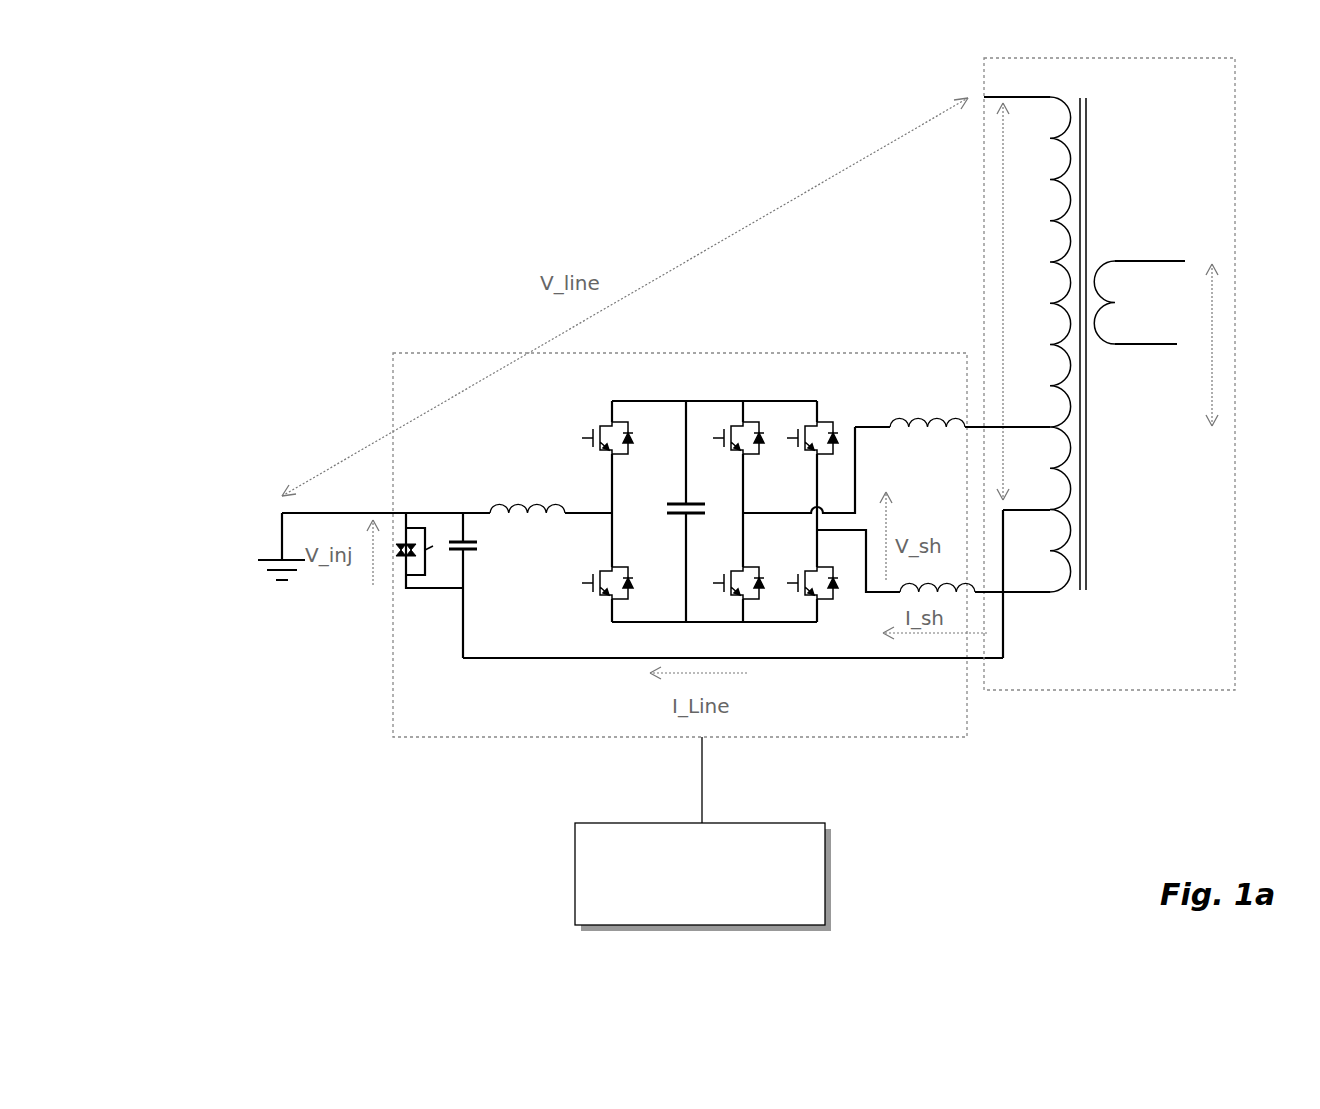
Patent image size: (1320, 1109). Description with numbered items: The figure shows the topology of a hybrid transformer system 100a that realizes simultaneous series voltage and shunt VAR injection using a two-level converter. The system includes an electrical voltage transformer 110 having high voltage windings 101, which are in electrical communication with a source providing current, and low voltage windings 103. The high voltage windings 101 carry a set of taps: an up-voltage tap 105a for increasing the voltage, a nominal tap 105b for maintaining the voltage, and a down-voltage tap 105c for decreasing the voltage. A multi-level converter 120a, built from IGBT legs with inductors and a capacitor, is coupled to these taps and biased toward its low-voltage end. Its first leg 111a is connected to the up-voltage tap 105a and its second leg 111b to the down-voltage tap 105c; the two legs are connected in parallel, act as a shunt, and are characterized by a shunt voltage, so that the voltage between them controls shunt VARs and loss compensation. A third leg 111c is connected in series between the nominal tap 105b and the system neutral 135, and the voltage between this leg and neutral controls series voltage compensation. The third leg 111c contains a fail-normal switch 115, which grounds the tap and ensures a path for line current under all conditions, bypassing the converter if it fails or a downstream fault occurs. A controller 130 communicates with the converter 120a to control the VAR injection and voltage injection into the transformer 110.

The hybrid transformer system 100a is at (453, 198).
The high voltage windings 101 is at (1038, 97).
The low voltage windings 103 is at (1152, 261).
The up-voltage tap (+n) 105a is at (1020, 427).
The nominal tap (m) 105b is at (1028, 511).
The down-voltage tap (−n) 105c is at (1026, 594).
The electrical voltage transformer 110 is at (1075, 352).
The first leg 111a is at (877, 427).
The second leg 111b is at (880, 593).
The third leg 111c is at (495, 660).
The fail-normal switch 115 is at (425, 589).
The multi-level converter 120a is at (642, 526).
The controller 130 is at (703, 834).
The system neutral 135 is at (256, 524).